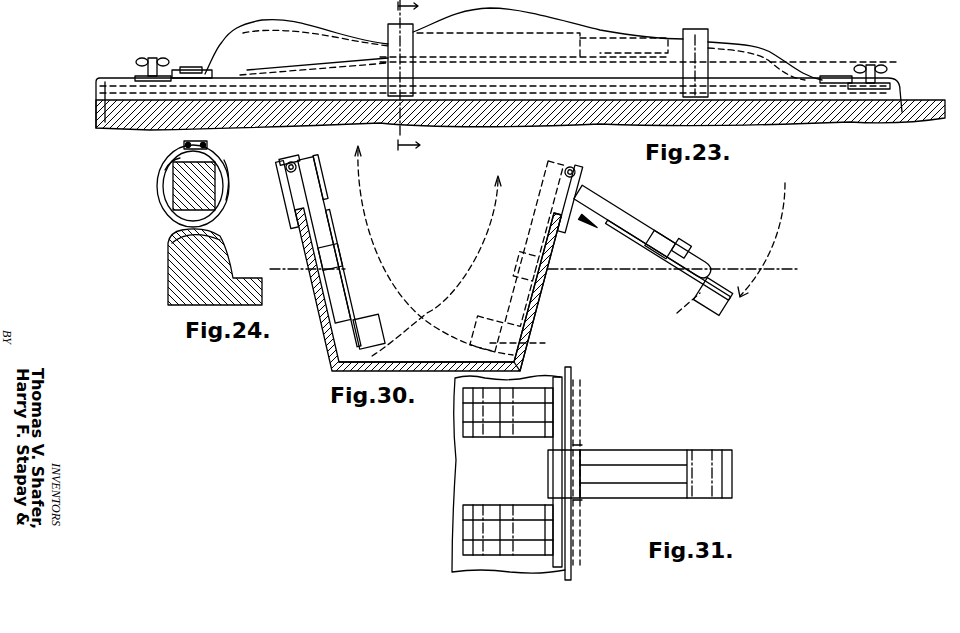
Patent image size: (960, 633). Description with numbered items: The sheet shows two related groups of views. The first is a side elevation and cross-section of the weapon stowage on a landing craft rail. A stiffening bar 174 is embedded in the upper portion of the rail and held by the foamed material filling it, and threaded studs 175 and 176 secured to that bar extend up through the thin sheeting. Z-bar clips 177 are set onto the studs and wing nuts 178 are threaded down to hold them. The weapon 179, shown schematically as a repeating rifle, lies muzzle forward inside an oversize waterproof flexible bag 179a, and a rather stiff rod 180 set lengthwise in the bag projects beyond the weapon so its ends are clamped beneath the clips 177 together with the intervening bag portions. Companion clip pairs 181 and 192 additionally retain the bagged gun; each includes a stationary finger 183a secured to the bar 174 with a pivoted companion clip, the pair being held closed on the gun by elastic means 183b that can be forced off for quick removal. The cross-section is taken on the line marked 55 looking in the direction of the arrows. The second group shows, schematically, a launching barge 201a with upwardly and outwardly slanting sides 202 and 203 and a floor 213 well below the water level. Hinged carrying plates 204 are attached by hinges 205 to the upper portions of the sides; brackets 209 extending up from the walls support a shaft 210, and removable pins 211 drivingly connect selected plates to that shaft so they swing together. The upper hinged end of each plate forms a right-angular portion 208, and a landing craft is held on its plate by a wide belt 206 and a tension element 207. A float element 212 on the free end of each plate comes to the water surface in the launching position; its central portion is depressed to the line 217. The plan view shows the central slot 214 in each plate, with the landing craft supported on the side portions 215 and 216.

In FIG. 23, the stiffening bar 174 is at (135, 126).
In FIG. 24, the stiffening bar 174 is at (170, 255).
In FIG. 23, the threaded stud 175 is at (152, 58).
In FIG. 23, the threaded stud 176 is at (870, 65).
In FIG. 23, the Z-bar clip 177 is at (200, 67).
In FIG. 23, the wing nut 178 is at (136, 64).
In FIG. 24, the weapon 179 is at (190, 191).
In FIG. 23, the flexible bag 179a is at (328, 36).
In FIG. 24, the flexible bag 179a is at (166, 172).
In FIG. 23, the rod 180 is at (238, 70).
In FIG. 24, the rod 180 is at (160, 214).
In FIG. 23, the clip pair 181 is at (390, 30).
In FIG. 24, the finger 183a is at (229, 175).
In FIG. 24, the elastic retaining means 183b is at (195, 143).
In FIG. 23, the clamp 192 is at (708, 42).
In FIG. 23, the section line 55 is at (404, 154).
In FIG. 30, the barge 201a is at (328, 371).
In FIG. 31, the barge 201a is at (472, 477).
In FIG. 30, the slanting side 202 is at (310, 312).
In FIG. 30, the slanting side 203 is at (545, 288).
In FIG. 31, the slanting side 203 is at (578, 560).
In FIG. 30, the carrying plate 204 is at (339, 236).
In FIG. 31, the carrying plate 204 is at (500, 437).
In FIG. 30, the hinge 205 is at (280, 156).
In FIG. 31, the hinge 205 is at (573, 400).
In FIG. 30, the belt 206 is at (345, 278).
In FIG. 30, the tension element 207 is at (337, 173).
In FIG. 30, the right-angular portion 208 is at (302, 144).
In FIG. 31, the right-angular portion 208 is at (553, 548).
In FIG. 30, the bracket 209 is at (292, 260).
In FIG. 31, the bracket 209 is at (578, 440).
In FIG. 30, the shaft 210 is at (544, 247).
In FIG. 31, the shaft 210 is at (572, 372).
In FIG. 31, the pin 211 is at (573, 412).
In FIG. 30, the float element 212 is at (377, 330).
In FIG. 31, the float element 212 is at (712, 478).
In FIG. 30, the floor 213 is at (423, 375).
In FIG. 31, the central slot 214 is at (652, 478).
In FIG. 31, the side portion 215 is at (643, 462).
In FIG. 31, the side portion 216 is at (627, 490).
In FIG. 30, the depressed float line 217 is at (530, 343).